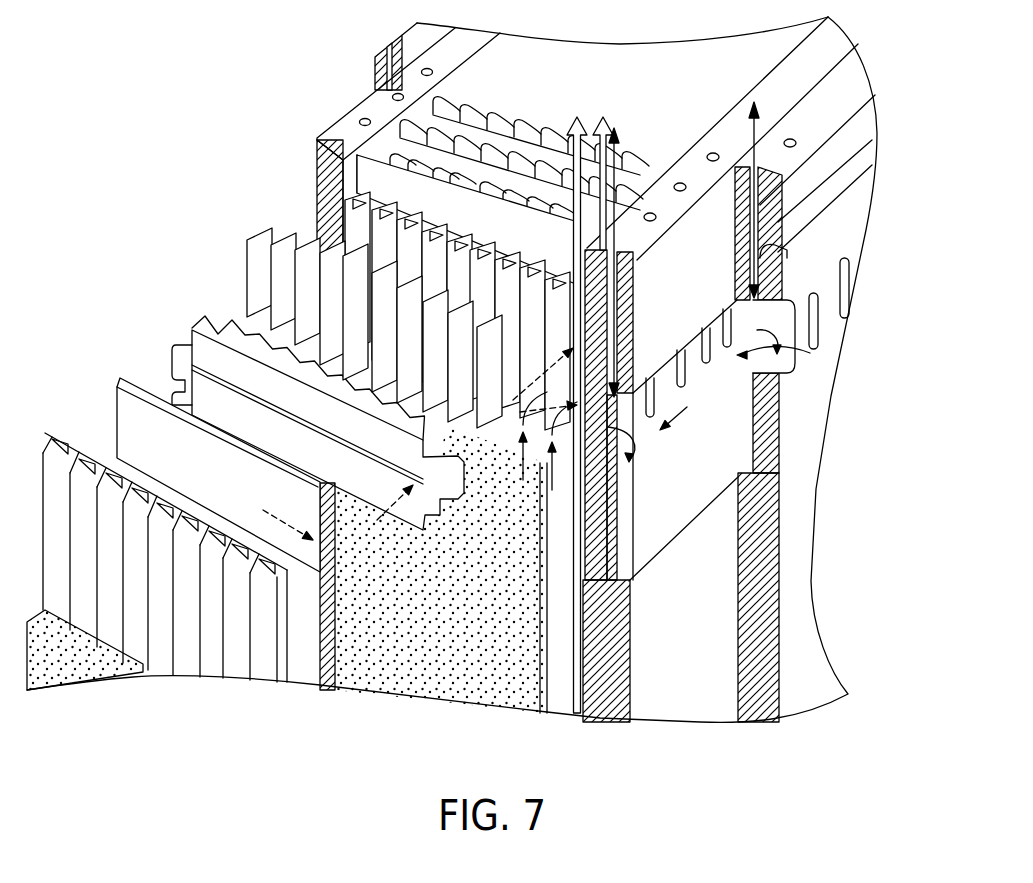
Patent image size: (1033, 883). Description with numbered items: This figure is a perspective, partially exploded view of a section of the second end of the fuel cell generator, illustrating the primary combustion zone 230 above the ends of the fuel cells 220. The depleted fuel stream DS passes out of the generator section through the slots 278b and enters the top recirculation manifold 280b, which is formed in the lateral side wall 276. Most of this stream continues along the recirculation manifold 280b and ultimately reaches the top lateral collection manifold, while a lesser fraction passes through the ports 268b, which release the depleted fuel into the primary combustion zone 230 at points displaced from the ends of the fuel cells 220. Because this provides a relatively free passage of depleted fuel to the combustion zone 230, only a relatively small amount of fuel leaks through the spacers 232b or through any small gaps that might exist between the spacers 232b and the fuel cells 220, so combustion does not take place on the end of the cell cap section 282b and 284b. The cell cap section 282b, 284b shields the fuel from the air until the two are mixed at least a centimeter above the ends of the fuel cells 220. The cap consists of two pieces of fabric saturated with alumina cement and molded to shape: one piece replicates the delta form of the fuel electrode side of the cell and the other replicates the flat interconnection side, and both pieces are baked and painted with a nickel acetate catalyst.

The primary combustion zone 230 is at (675, 63).
The ports 268b is at (781, 176).
The cell cap section 282b is at (277, 290).
The spacers 232b is at (207, 350).
The cell cap section 284b is at (128, 432).
The depleted fuel stream DS is at (523, 392).
The slots 278b is at (687, 382).
The fuel cells 220 is at (565, 466).
The top recirculation manifold 280b is at (697, 480).
The lateral side wall 276 is at (737, 564).